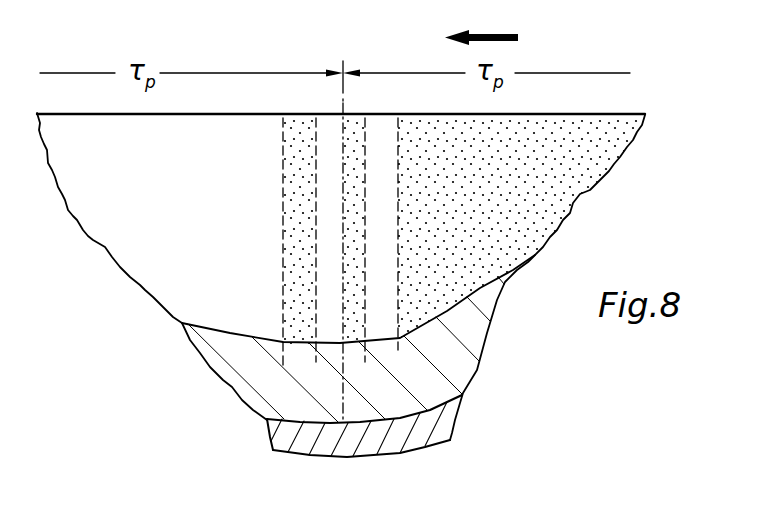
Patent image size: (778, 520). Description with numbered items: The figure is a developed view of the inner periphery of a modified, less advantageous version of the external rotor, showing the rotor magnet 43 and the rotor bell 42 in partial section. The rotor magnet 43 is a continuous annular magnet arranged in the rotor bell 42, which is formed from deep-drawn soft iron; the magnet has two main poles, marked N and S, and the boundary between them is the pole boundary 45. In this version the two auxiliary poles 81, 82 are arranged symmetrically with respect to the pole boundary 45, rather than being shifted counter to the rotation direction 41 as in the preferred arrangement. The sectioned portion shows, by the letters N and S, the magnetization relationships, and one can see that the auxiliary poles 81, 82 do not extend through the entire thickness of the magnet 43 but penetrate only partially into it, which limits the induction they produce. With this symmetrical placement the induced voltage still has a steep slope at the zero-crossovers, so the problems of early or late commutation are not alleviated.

The rotation direction 41 is at (496, 34).
The rotor bell 42 is at (384, 450).
The rotor magnet 43 is at (634, 108).
The pole boundary 45 is at (343, 62).
The auxiliary pole 81 is at (290, 181).
The auxiliary pole 82 is at (396, 174).